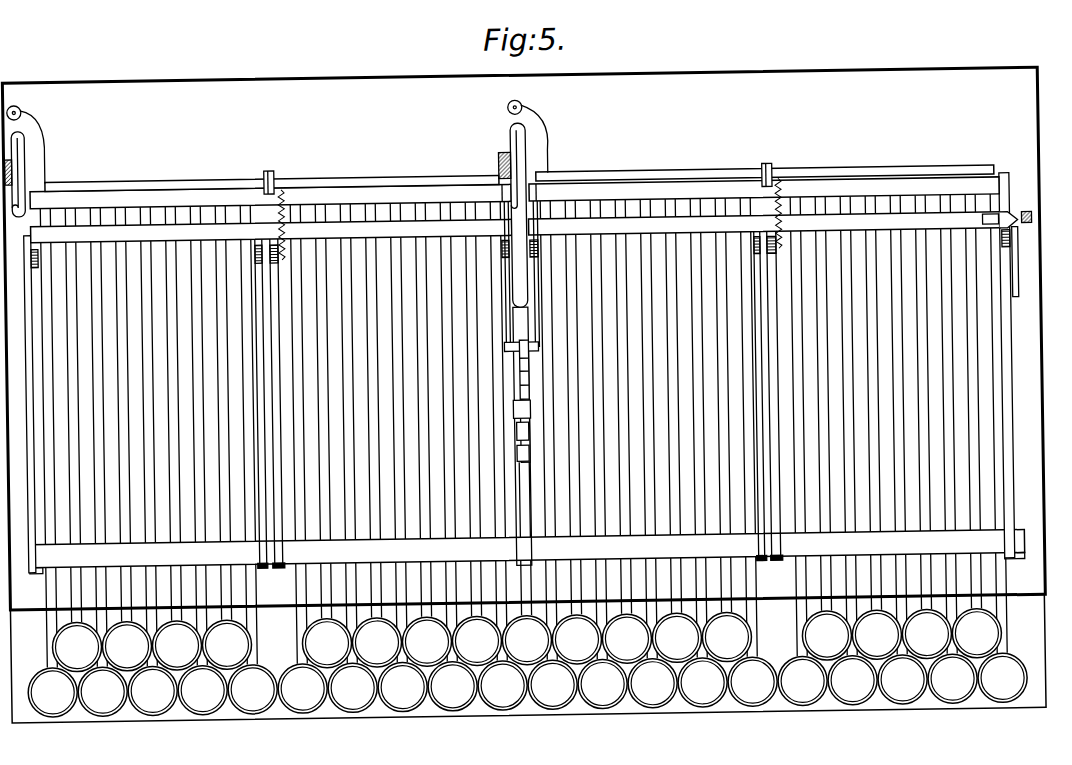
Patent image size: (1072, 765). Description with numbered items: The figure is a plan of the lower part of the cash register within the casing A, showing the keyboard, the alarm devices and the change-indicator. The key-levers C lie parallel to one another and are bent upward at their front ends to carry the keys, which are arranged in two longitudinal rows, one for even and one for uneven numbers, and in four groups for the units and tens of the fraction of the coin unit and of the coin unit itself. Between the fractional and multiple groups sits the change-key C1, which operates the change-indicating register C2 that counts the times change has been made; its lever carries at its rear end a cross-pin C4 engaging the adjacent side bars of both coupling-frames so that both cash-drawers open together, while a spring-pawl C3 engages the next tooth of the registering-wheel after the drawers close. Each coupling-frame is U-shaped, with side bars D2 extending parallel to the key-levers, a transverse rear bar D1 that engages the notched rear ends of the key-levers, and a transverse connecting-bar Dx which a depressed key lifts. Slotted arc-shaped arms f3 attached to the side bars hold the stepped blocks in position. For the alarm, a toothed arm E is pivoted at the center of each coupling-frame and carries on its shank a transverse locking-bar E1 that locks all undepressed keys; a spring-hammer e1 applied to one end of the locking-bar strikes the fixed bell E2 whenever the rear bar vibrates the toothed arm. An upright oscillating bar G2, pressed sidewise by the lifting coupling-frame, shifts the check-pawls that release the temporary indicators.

The casing A is at (535, 377).
The key-levers C is at (524, 456).
The change-key C1 is at (526, 563).
The change-indicating register C2 is at (516, 433).
The spring-pawl C3 is at (530, 352).
The cross-pin C4 is at (520, 343).
The rear bar D1 is at (526, 373).
The side bars D2 is at (514, 191).
The transverse connecting-bar Dx is at (524, 227).
The toothed arm E is at (522, 199).
The locking-bar E1 is at (519, 168).
The bell E2 is at (266, 219).
The spring-hammer e1 is at (281, 135).
The slotted arc-shaped arms f3 is at (980, 262).
The upright oscillating bar G2 is at (1029, 218).